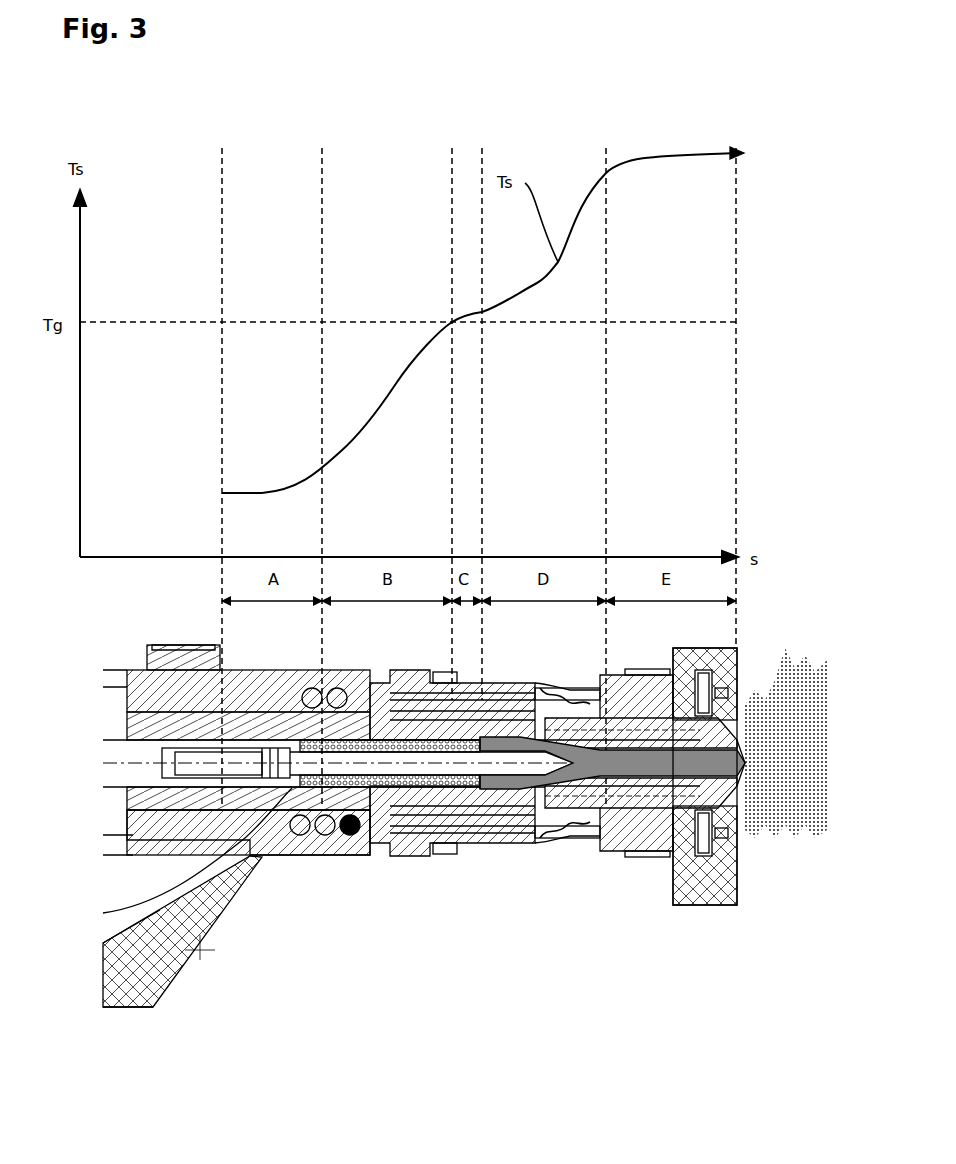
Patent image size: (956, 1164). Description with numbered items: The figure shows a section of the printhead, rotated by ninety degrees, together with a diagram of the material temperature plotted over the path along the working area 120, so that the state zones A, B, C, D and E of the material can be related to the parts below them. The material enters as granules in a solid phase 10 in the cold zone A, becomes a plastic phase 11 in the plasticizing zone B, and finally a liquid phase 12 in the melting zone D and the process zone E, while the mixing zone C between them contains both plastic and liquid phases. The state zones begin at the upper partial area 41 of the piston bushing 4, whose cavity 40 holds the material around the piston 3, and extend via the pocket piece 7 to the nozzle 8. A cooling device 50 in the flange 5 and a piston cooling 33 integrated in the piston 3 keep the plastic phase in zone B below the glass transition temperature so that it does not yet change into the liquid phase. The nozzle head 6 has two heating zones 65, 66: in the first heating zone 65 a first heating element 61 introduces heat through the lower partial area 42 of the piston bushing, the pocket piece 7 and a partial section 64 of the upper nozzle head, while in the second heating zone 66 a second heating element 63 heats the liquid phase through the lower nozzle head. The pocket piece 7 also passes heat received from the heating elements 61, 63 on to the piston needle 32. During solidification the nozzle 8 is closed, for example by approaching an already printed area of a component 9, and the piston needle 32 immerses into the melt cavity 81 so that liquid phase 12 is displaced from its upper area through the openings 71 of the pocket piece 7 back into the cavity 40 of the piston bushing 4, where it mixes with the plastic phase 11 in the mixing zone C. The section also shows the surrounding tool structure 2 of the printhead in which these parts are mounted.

The injection molding tool 2 is at (207, 838).
The material in solid phase 10 is at (180, 877).
The piston 3 is at (122, 748).
The flange 5 is at (292, 857).
The piston cooling 33 is at (283, 757).
The cooling device 50 is at (296, 850).
The cavity of the piston bushing 40 is at (388, 843).
The material in plastic phase 11 is at (326, 832).
The piston needle 32 is at (420, 767).
The piston bushing 4 is at (402, 741).
The upper partial area of the piston bushing 41 is at (307, 727).
The lower partial area of the piston bushing 42 is at (433, 730).
The nozzle head 6 is at (571, 804).
The first heating element 61 is at (420, 845).
The second heating element 63 is at (628, 835).
The pocket piece 7 is at (493, 730).
The partial section of the upper nozzle head 64 is at (533, 730).
The openings of the pocket piece 71 is at (495, 790).
The melt cavity 81 is at (670, 789).
The material in liquid phase 12 is at (673, 768).
The nozzle 8 is at (752, 755).
The component 9 is at (765, 810).
The first heating zone 65 is at (395, 950).
The second heating zone 66 is at (582, 950).
The working area 120 is at (222, 1034).